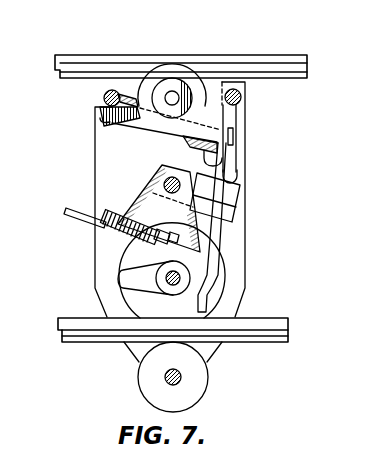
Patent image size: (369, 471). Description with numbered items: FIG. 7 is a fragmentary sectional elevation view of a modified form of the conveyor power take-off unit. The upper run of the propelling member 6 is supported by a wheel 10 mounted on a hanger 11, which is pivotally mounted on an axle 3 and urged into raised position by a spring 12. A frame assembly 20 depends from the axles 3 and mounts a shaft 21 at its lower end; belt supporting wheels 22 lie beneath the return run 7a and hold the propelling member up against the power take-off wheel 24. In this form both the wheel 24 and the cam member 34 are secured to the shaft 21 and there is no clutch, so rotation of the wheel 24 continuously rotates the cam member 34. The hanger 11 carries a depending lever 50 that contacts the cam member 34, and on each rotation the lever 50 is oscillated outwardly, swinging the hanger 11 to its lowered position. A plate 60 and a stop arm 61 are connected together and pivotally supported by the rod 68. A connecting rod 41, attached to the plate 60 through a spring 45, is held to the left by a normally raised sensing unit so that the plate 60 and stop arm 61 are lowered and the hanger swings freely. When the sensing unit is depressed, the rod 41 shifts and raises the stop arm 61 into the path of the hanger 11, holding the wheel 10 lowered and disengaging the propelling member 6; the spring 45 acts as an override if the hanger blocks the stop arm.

The axle 3 is at (104, 98).
The propelling member 6 is at (289, 52).
The return run 7a is at (278, 333).
The wheel 10 is at (177, 75).
The hanger 11 is at (110, 122).
The spring 12 is at (240, 166).
The frame assembly 20 is at (88, 288).
The shaft 21 is at (183, 276).
The wheel 22 is at (197, 387).
The power take-off wheel 24 is at (133, 297).
The cam member 34 is at (126, 268).
The rod 41 is at (77, 215).
The spring 45 is at (110, 237).
The lever 50 is at (227, 153).
The plate 60 is at (140, 190).
The stop arm 61 is at (238, 174).
The rod 68 is at (240, 210).